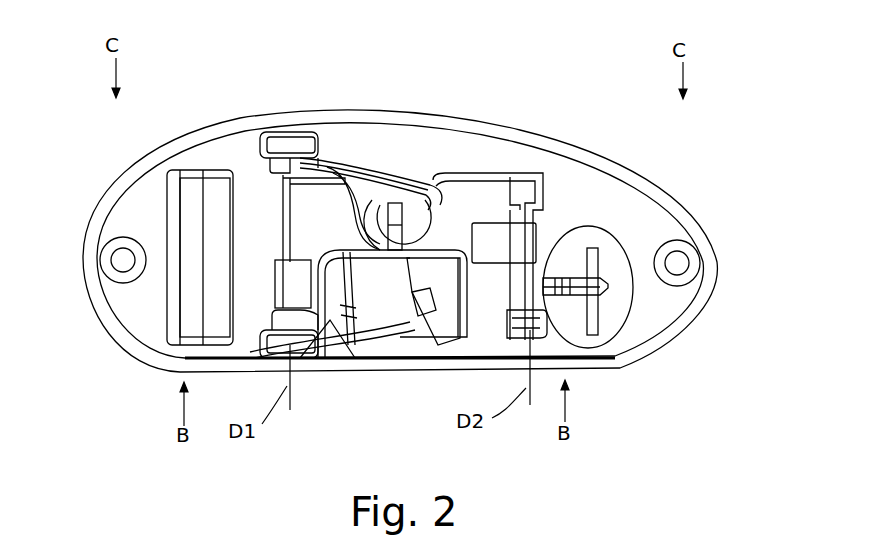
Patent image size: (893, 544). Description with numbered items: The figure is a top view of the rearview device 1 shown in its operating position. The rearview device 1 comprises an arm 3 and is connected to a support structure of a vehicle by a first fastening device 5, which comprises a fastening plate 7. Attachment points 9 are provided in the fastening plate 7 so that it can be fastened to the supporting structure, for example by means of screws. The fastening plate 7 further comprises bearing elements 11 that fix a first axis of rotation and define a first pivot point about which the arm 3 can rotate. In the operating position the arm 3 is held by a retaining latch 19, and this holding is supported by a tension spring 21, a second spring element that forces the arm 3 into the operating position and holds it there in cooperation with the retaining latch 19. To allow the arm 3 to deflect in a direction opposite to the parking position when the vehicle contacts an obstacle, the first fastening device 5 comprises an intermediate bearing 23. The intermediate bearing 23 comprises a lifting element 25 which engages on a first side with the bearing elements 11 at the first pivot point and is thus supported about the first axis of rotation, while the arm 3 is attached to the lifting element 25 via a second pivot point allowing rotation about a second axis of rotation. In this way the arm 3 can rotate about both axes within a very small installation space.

The rearview device 1 is at (524, 96).
The arm 3 is at (345, 348).
The first fastening device 5 is at (700, 178).
The fastening plate 7 is at (197, 132).
The attachment points 9 is at (125, 261).
The bearing elements 11 is at (270, 132).
The retaining latch 19 is at (607, 220).
The tension spring 21 is at (414, 174).
The intermediate bearing 23 is at (396, 166).
The lifting element 25 is at (364, 168).